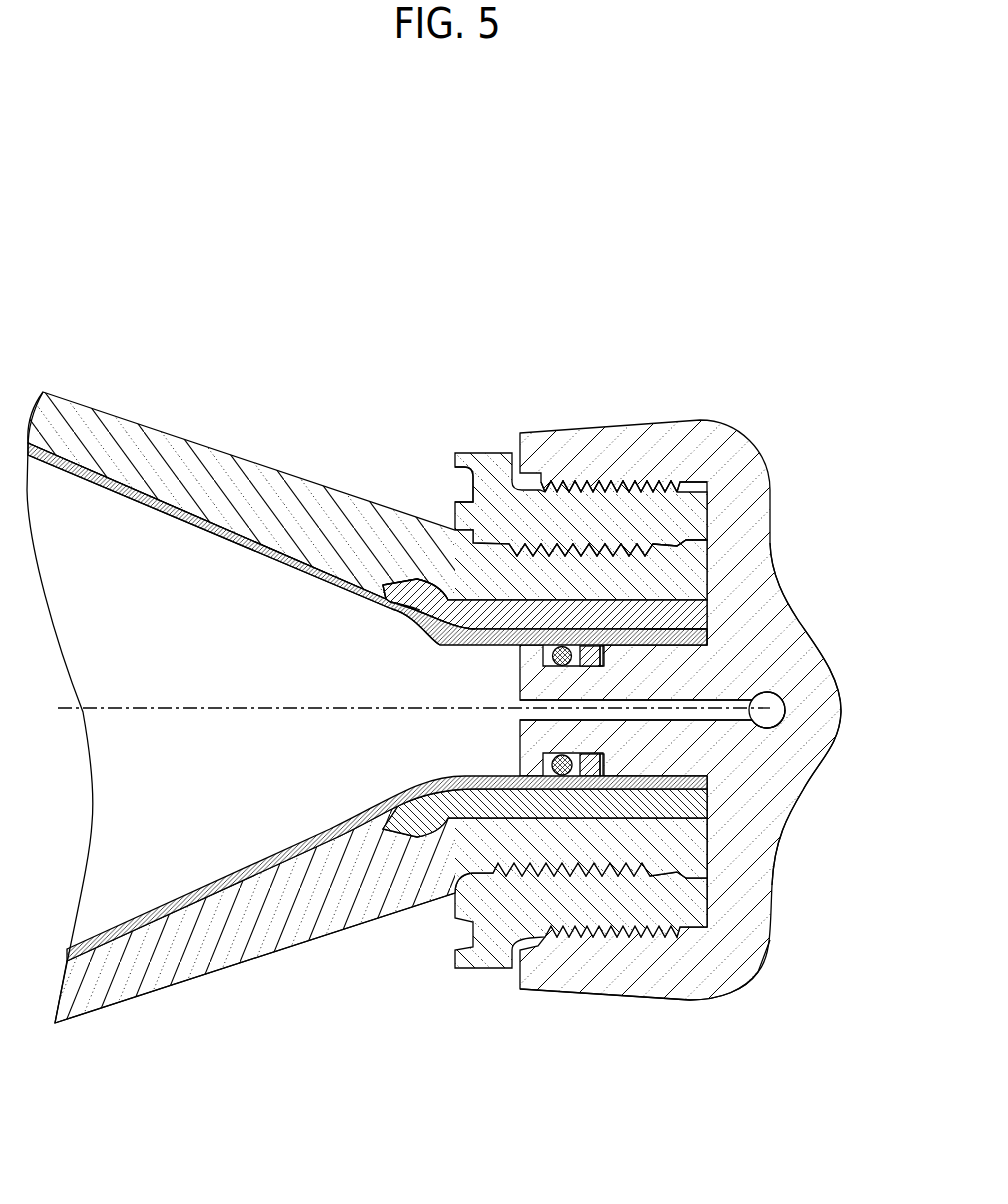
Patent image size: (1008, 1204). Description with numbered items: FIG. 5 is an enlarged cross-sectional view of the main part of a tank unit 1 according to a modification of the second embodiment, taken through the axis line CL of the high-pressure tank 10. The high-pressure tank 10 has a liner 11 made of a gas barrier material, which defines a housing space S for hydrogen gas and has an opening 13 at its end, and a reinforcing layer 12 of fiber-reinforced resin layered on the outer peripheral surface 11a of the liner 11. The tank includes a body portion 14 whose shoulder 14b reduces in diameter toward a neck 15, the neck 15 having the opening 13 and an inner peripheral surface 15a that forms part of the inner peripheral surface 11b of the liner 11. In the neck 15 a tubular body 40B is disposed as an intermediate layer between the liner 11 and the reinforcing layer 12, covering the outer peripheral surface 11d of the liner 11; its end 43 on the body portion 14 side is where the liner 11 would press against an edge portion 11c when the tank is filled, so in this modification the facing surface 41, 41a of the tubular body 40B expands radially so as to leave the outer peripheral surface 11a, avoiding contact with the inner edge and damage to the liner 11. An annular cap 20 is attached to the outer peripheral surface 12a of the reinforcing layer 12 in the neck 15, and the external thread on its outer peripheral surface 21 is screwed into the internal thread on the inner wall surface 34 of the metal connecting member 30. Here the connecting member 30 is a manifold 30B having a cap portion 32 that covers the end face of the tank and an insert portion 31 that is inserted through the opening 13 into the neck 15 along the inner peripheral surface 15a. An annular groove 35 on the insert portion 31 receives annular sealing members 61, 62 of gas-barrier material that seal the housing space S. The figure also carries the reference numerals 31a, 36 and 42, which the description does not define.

The tank unit 1 is at (312, 283).
The high-pressure tank 10 is at (448, 695).
The liner 11 is at (103, 485).
The outer peripheral surface of the liner 11a is at (243, 530).
The inner peripheral surface of the liner 11b is at (220, 537).
The edge portion 11c is at (437, 613).
The outer peripheral surface of the liner forming the neck 11d is at (677, 630).
The reinforcing layer 12 is at (230, 965).
The outer peripheral surface of the reinforcing layer 12a is at (643, 540).
The opening 13 is at (645, 647).
The body portion 14 is at (140, 993).
The shoulder 14b is at (333, 927).
The neck 15 is at (460, 863).
The inner peripheral surface of the neck 15a is at (752, 695).
The cap 20 is at (503, 463).
The outer peripheral surface of the cap 21 is at (583, 478).
The connecting member 30 is at (747, 969).
The manifold 30B is at (790, 808).
The insert portion 31 is at (668, 747).
The inner peripheral surface 31a is at (707, 793).
The cap portion 32 is at (793, 610).
The inner wall surface of the connecting member 34 is at (650, 488).
The annular groove 35 is at (560, 660).
The passage 36 is at (775, 716).
The tubular body 40B is at (480, 477).
The facing surface 41 is at (492, 636).
The facing surface on the body portion side 41a is at (383, 605).
The ring portion 42 is at (408, 588).
The end of the tubular body 43 is at (383, 597).
The annular sealing member 61 is at (562, 762).
The annular sealing member 62 is at (590, 754).
The housing space S is at (156, 634).
The axis line CL is at (409, 741).